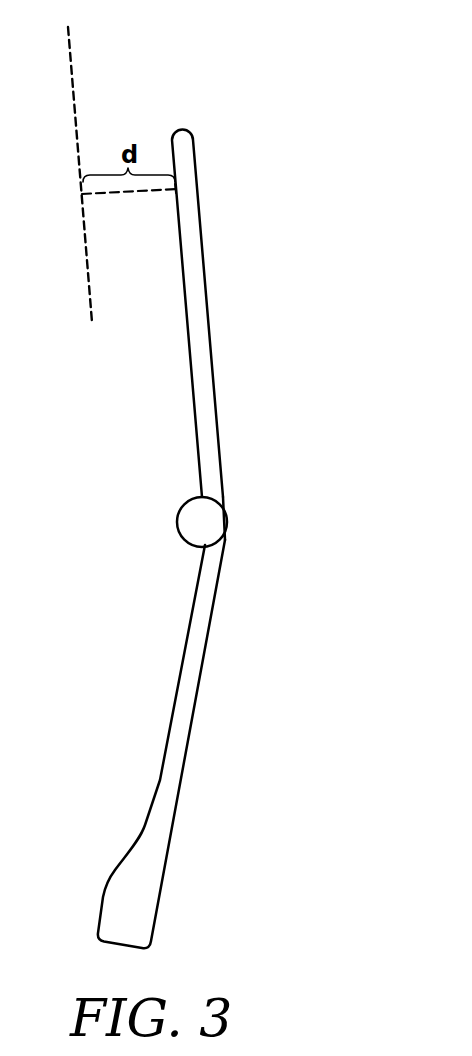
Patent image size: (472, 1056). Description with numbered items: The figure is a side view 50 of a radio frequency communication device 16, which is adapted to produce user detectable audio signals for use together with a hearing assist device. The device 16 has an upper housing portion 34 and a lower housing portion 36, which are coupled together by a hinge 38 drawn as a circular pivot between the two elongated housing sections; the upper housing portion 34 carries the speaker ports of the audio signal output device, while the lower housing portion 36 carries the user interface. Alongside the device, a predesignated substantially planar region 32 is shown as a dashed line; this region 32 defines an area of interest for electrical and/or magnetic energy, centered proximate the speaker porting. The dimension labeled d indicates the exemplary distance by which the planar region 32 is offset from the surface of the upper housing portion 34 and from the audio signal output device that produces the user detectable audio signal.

The radio frequency communication device 16 is at (185, 539).
The predesignated substantially planar region 32 is at (72, 70).
The upper housing portion 34 is at (199, 318).
The lower housing portion 36 is at (178, 759).
The hinge 38 is at (217, 524).
The side view 50 is at (266, 57).